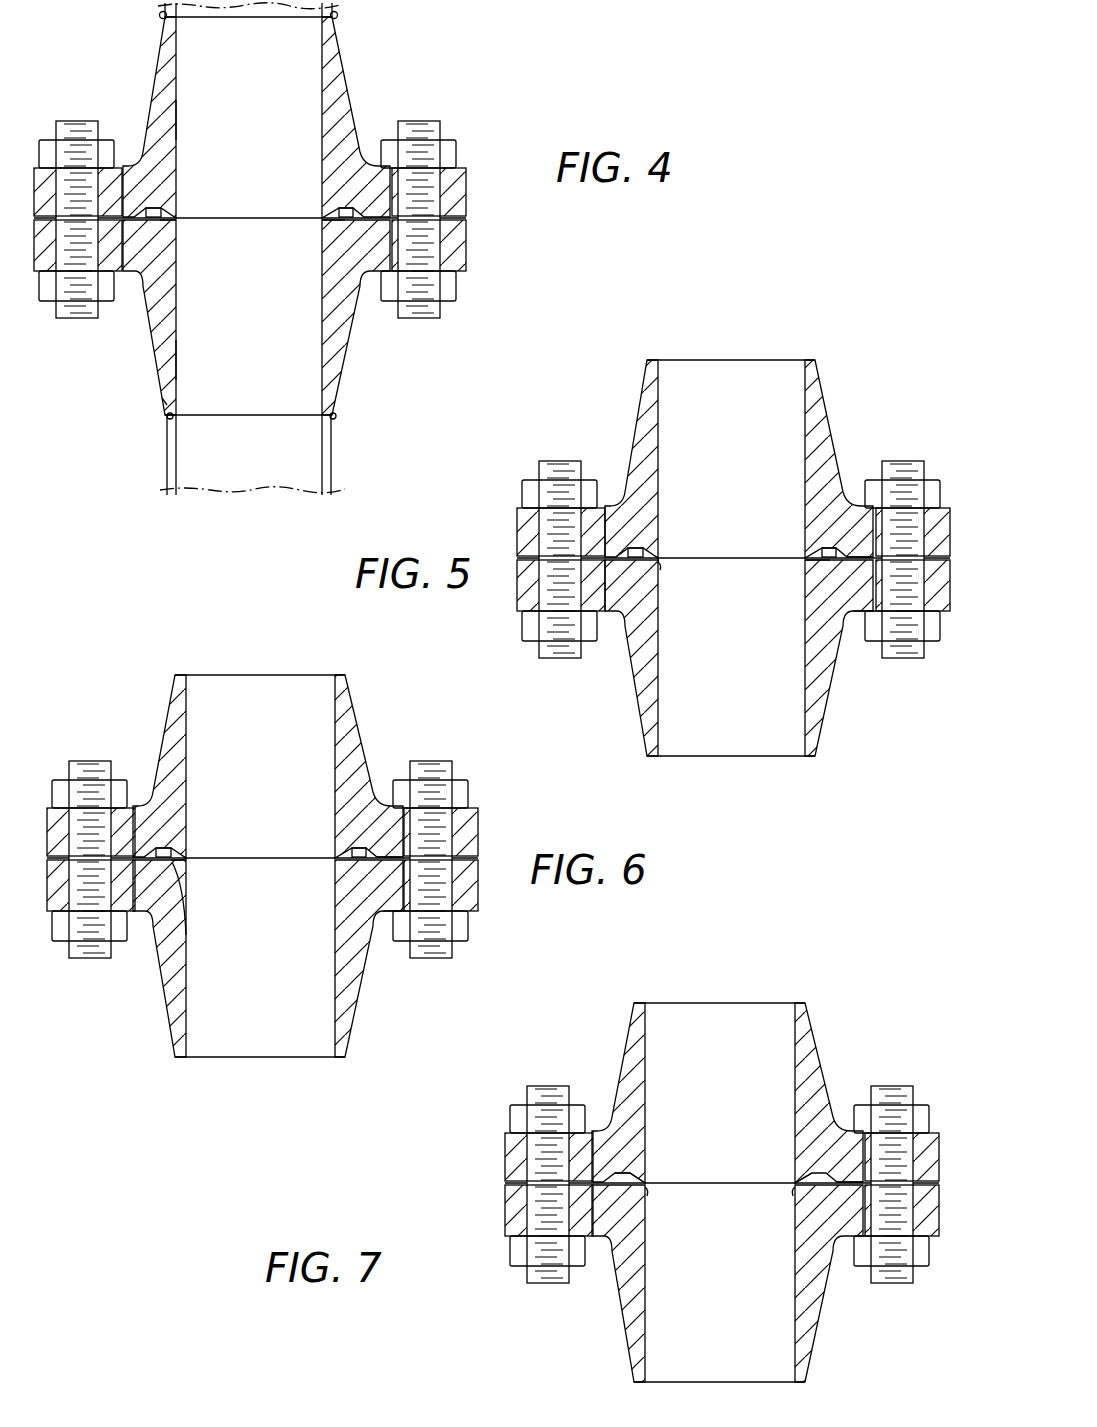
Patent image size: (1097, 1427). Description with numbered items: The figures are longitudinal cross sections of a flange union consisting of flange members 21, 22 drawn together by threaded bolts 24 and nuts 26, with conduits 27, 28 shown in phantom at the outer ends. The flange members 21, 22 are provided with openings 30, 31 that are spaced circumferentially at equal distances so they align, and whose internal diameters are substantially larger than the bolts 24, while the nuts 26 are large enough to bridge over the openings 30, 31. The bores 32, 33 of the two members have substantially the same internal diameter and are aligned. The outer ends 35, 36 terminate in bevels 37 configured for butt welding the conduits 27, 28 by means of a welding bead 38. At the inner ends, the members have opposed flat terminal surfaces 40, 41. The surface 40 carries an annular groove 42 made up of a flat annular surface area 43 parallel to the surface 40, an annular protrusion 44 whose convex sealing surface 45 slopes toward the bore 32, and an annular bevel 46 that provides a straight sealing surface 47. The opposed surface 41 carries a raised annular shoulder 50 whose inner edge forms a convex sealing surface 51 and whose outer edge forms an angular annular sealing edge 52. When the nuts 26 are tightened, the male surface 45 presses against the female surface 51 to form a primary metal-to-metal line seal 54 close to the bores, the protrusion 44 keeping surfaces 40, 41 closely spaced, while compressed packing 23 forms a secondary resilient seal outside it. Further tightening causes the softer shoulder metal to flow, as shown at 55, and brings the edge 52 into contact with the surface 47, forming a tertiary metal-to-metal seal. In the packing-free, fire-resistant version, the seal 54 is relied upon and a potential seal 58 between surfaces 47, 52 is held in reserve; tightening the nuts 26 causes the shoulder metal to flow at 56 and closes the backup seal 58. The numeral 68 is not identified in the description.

In FIG. 4, the flange member 21 is at (350, 112).
In FIG. 5, the flange member 21 is at (640, 422).
In FIG. 6, the flange member 21 is at (352, 722).
In FIG. 7, the flange member 21 is at (812, 1045).
In FIG. 4, the flange member 22 is at (352, 350).
In FIG. 5, the flange member 22 is at (640, 705).
In FIG. 6, the flange member 22 is at (372, 1000).
In FIG. 7, the flange member 22 is at (812, 1302).
In FIG. 4, the packing 23 is at (338, 234).
In FIG. 5, the packing 23 is at (818, 546).
In FIG. 4, the threaded bolts 24 is at (440, 128).
In FIG. 5, the threaded bolts 24 is at (911, 462).
In FIG. 6, the threaded bolts 24 is at (450, 762).
In FIG. 7, the threaded bolts 24 is at (911, 1085).
In FIG. 4, the nuts 26 is at (456, 152).
In FIG. 5, the nuts 26 is at (931, 487).
In FIG. 6, the nuts 26 is at (468, 783).
In FIG. 7, the nuts 26 is at (928, 1108).
In FIG. 4, the conduit 27 is at (350, 10).
In FIG. 4, the conduit 28 is at (345, 472).
In FIG. 4, the openings 30 is at (446, 192).
In FIG. 4, the openings 31 is at (450, 263).
In FIG. 4, the bore 32 is at (178, 122).
In FIG. 4, the bore 33 is at (178, 364).
In FIG. 4, the outer end 35 is at (160, 27).
In FIG. 4, the outer end 36 is at (162, 404).
In FIG. 4, the bevels 37 is at (165, 420).
In FIG. 4, the welding bead 38 is at (338, 22).
In FIG. 4, the terminal inner end surface 40 is at (126, 214).
In FIG. 5, the terminal inner end surface 40 is at (606, 555).
In FIG. 6, the terminal inner end surface 40 is at (137, 855).
In FIG. 7, the terminal inner end surface 40 is at (600, 1180).
In FIG. 4, the terminal inner end surface 41 is at (128, 222).
In FIG. 5, the terminal inner end surface 41 is at (606, 574).
In FIG. 6, the terminal inner end surface 41 is at (140, 868).
In FIG. 7, the terminal inner end surface 41 is at (598, 1195).
In FIG. 4, the annular groove 42 is at (162, 209).
In FIG. 6, the flat annular surface area 43 is at (165, 846).
In FIG. 7, the annular protrusion 44 is at (790, 1178).
In FIG. 5, the annular convex sealing surface 45 is at (663, 556).
In FIG. 6, the annular convex sealing surface 45 is at (187, 855).
In FIG. 7, the annular bevel 46 is at (834, 1176).
In FIG. 5, the straight sealing surface 47 is at (842, 548).
In FIG. 6, the straight sealing surface 47 is at (372, 853).
In FIG. 6, the raised annular shoulder area 50 is at (178, 900).
In FIG. 4, the annular convex sealing surface 51 is at (180, 222).
In FIG. 6, the annular convex sealing surface 51 is at (190, 862).
In FIG. 5, the angular annular sealing edge 52 is at (848, 595).
In FIG. 6, the angular annular sealing edge 52 is at (378, 866).
In FIG. 4, the line seal 54 is at (337, 214).
In FIG. 5, the line seal 54 is at (806, 552).
In FIG. 6, the line seal 54 is at (352, 852).
In FIG. 7, the line seal 54 is at (650, 1180).
In FIG. 5, the flowed metal 55 is at (664, 565).
In FIG. 7, the flowed metal 56 is at (650, 1195).
In FIG. 5, the backup metal-to-metal seal 58 is at (648, 546).
In FIG. 7, the backup metal-to-metal seal 58 is at (648, 1130).
In FIG. 7, the sealing surface 68 is at (802, 1200).